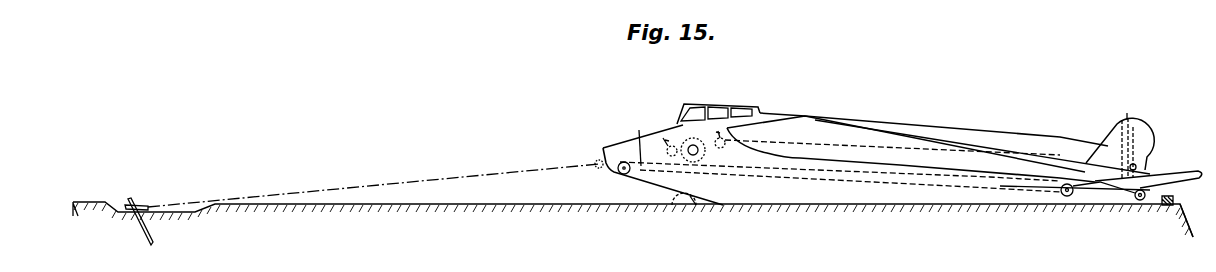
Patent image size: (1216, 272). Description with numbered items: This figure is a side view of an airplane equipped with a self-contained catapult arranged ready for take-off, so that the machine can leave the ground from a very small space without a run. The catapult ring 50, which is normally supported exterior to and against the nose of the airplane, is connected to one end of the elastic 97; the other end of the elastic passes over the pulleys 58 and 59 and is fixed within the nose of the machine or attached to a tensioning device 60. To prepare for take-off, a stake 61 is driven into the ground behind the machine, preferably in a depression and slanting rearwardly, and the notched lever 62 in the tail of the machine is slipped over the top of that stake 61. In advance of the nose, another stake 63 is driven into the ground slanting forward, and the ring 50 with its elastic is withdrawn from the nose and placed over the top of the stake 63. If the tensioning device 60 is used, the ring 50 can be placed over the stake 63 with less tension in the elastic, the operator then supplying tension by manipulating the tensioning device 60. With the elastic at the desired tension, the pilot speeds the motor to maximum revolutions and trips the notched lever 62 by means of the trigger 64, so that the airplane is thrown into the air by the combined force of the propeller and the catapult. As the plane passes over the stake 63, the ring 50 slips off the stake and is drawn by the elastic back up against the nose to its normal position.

The catapult ring 50 is at (140, 201).
The pulley 58 is at (626, 175).
The pulley 59 is at (1064, 197).
The tensioning device 60 is at (694, 148).
The stake 61 is at (1167, 210).
The notched lever 62 is at (1181, 208).
The stake 63 is at (143, 229).
The trigger 64 is at (722, 142).
The elastic 97 is at (641, 166).